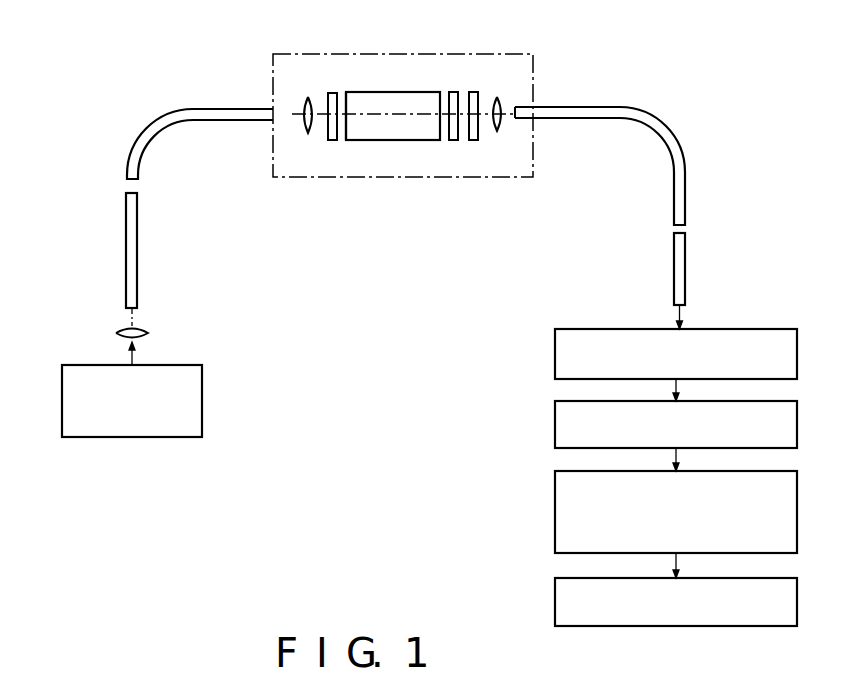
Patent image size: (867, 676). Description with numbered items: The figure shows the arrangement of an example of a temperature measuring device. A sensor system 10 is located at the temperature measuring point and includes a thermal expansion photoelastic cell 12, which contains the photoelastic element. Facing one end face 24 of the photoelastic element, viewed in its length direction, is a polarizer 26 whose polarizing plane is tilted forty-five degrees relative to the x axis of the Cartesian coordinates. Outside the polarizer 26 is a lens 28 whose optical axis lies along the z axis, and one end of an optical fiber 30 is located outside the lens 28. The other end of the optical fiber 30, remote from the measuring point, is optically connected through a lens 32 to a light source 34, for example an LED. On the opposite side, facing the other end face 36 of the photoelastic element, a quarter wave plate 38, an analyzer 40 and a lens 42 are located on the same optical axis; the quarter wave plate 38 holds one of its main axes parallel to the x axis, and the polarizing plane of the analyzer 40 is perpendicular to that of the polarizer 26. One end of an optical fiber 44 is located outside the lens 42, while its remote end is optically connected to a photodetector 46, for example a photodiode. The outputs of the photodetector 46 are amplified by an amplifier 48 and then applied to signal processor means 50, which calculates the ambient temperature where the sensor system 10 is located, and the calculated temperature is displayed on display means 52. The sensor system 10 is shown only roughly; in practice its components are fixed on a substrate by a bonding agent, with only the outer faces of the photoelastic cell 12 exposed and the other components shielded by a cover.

The sensor system 10 is at (471, 53).
The thermal expansion photoelastic cell 12 is at (396, 90).
The one end face 24 is at (346, 100).
The polarizer 26 is at (332, 140).
The lens 28 is at (308, 133).
The optical fiber 30 is at (182, 110).
The lens 32 is at (148, 332).
The light source 34 is at (202, 396).
The other end face 36 is at (442, 132).
The 1/4 wave plate 38 is at (453, 140).
The analyzer 40 is at (473, 140).
The lens 42 is at (498, 130).
The optical fiber 44 is at (659, 121).
The photodetector 46 is at (555, 352).
The amplifier 48 is at (555, 435).
The signal processor means 50 is at (555, 500).
The display means 52 is at (555, 596).